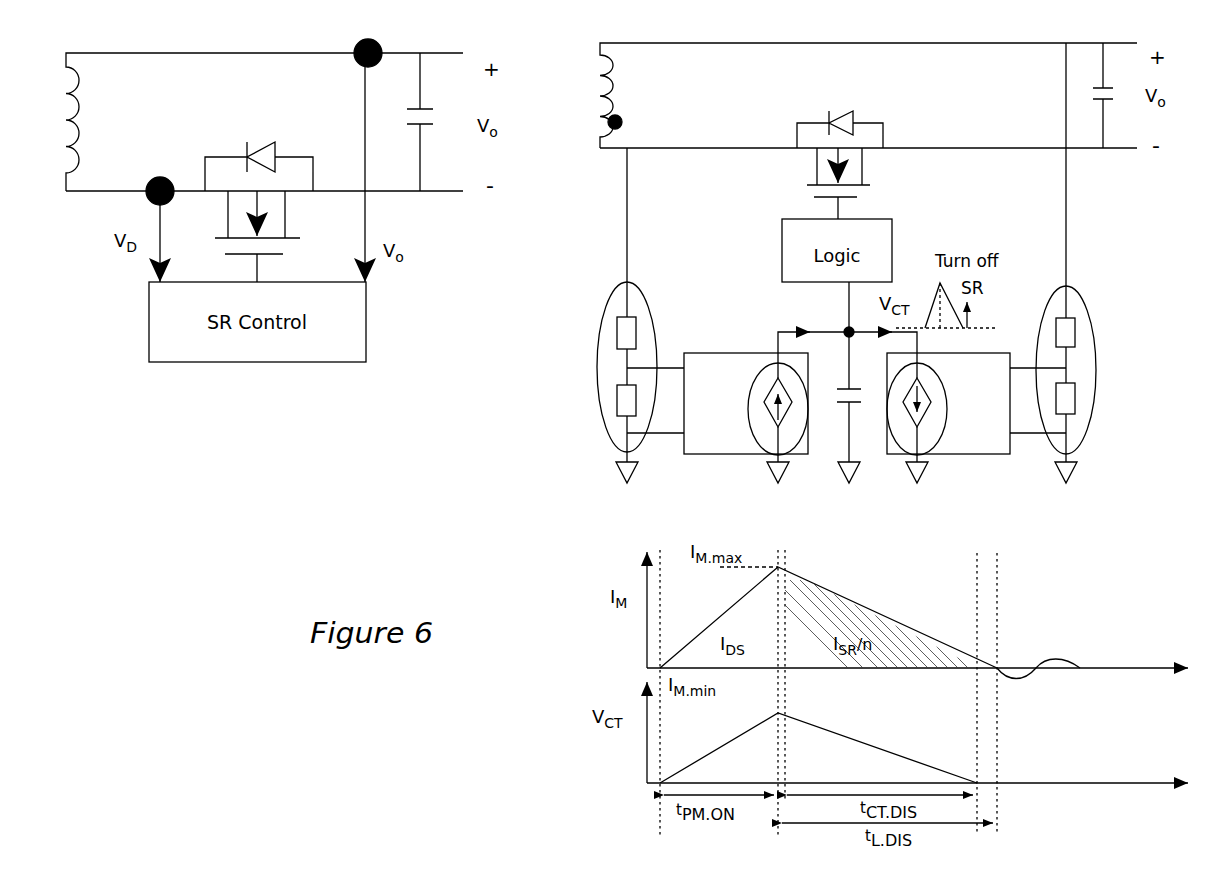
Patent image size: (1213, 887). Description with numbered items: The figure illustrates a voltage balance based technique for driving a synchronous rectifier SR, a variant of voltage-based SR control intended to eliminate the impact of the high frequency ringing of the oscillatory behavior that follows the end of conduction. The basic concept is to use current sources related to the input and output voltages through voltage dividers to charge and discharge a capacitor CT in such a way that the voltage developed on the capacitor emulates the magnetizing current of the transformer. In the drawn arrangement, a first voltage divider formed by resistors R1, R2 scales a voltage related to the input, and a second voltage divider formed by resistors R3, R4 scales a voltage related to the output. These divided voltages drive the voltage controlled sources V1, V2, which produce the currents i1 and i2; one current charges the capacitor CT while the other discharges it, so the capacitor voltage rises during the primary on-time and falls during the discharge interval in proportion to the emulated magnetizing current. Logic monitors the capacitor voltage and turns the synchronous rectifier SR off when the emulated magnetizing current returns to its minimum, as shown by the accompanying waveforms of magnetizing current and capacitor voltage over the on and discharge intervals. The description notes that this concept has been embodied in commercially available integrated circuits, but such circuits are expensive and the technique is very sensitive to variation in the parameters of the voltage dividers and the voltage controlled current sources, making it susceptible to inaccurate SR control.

The synchronous rectifier SR is at (544, 196).
The capacitor CT is at (839, 397).
The current source i1 is at (778, 412).
The current source i2 is at (917, 412).
The voltage controlled current source V1 is at (717, 403).
The voltage controlled current source V2 is at (976, 403).
The voltage divider resistor R1 is at (599, 333).
The voltage divider resistor R2 is at (597, 401).
The voltage divider resistor R3 is at (1087, 334).
The voltage divider resistor R4 is at (1087, 400).